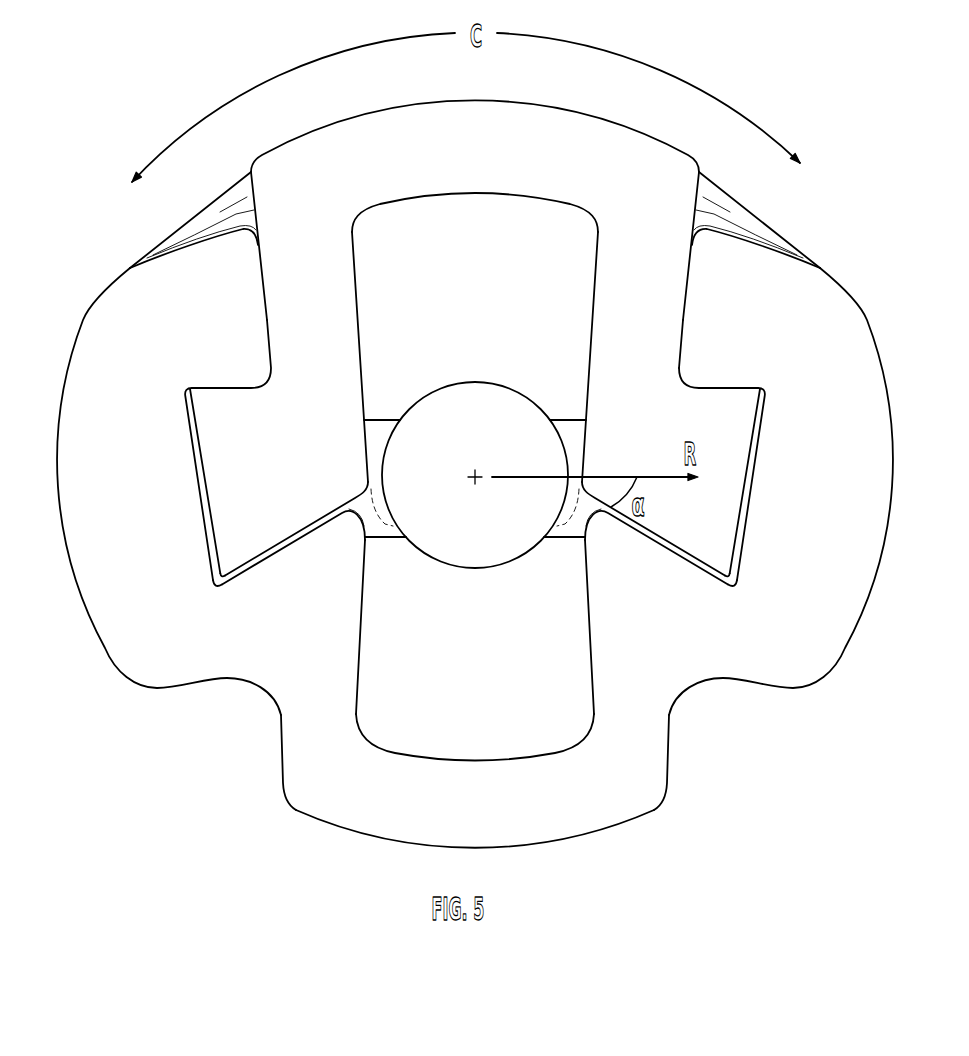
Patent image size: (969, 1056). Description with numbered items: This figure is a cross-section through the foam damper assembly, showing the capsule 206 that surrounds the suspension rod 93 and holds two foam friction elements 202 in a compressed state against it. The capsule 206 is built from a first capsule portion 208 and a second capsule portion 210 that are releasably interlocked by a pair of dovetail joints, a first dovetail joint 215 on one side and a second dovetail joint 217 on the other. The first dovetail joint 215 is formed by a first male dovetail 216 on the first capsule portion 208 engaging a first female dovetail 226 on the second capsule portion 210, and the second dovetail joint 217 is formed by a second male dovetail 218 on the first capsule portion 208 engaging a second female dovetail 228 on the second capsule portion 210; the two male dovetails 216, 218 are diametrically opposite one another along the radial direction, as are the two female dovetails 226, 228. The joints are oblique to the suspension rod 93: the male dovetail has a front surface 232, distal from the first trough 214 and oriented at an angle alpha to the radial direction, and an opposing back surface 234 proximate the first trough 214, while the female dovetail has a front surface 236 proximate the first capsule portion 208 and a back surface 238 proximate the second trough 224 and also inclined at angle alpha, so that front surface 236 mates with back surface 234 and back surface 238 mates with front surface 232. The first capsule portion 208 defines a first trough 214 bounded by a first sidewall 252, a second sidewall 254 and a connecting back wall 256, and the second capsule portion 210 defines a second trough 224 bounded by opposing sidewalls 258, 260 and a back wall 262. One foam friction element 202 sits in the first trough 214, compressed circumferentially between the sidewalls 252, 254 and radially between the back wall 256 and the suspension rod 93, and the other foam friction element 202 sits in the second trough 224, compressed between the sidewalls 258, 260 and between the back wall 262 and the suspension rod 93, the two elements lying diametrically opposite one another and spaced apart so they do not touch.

The suspension rod 93 is at (463, 456).
The foam friction element 202 is at (470, 475).
The capsule 206 is at (145, 117).
The first capsule portion 208 is at (641, 132).
The second capsule portion 210 is at (636, 820).
The first trough 214 is at (430, 172).
The first dovetail joint 215 is at (178, 533).
The first male dovetail 216 is at (238, 521).
The second dovetail joint 217 is at (769, 405).
The second male dovetail 218 is at (703, 499).
The second trough 224 is at (428, 802).
The first female dovetail 226 is at (224, 584).
The second female dovetail 228 is at (730, 573).
The front surface 232 is at (662, 543).
The back surface 234 is at (733, 390).
The front surface 236 is at (712, 388).
The back surface 238 is at (674, 558).
The first sidewall 252 is at (593, 313).
The second sidewall 254 is at (358, 345).
The back wall 256 is at (512, 194).
The sidewall 258 is at (592, 655).
The sidewall 260 is at (358, 655).
The back wall 262 is at (551, 755).